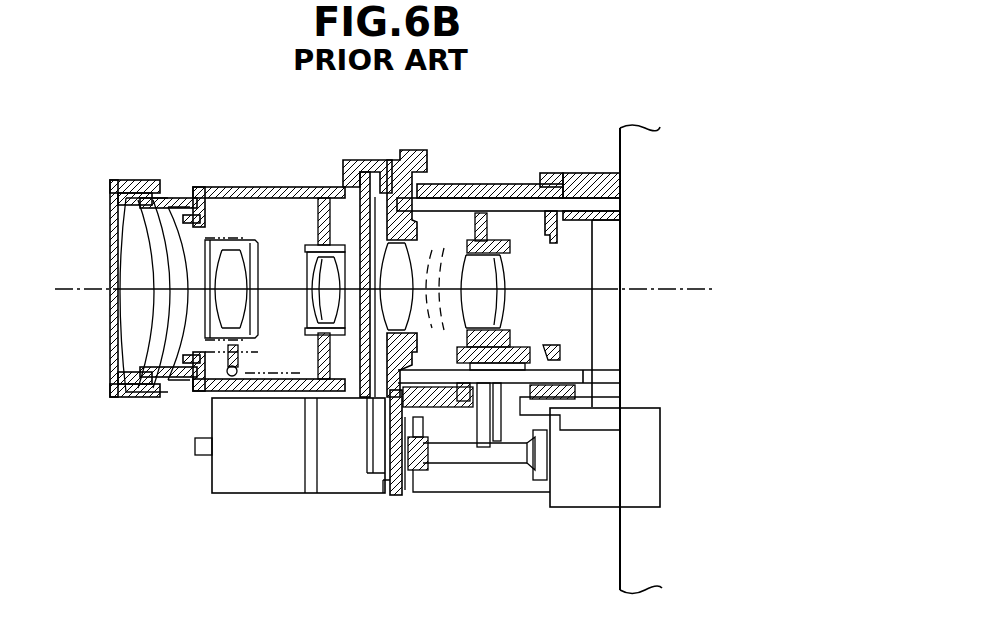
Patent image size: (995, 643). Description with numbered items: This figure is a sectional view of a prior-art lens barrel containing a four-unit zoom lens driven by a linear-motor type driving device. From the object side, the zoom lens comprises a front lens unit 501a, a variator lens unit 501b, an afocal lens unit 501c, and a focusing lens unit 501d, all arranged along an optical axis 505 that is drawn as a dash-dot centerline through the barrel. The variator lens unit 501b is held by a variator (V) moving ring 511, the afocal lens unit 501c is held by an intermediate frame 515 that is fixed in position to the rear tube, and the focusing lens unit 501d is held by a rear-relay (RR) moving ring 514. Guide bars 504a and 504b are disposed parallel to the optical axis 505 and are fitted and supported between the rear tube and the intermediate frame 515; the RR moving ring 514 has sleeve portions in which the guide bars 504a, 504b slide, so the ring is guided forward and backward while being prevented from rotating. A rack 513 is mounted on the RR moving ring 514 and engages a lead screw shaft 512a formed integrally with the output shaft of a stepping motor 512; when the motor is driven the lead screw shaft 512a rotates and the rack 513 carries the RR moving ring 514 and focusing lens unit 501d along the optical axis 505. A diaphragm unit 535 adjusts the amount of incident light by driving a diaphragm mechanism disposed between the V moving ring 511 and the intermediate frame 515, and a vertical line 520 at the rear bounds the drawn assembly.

The front lens unit 501a is at (153, 232).
The variator lens unit 501b is at (315, 277).
The afocal lens unit 501c is at (440, 210).
The focusing lens unit 501d is at (493, 257).
The guide bar 504a is at (403, 263).
The guide bar 504b is at (580, 378).
The optical axis 505 is at (672, 283).
The variator (V) moving ring 511 is at (345, 228).
The stepping motor 512 is at (577, 495).
The lead screw shaft 512a is at (445, 457).
The rack 513 is at (487, 437).
The rear-relay (RR) moving ring 514 is at (518, 338).
The intermediate frame 515 is at (397, 496).
The camera body 520 is at (613, 133).
The diaphragm unit 535 is at (247, 478).